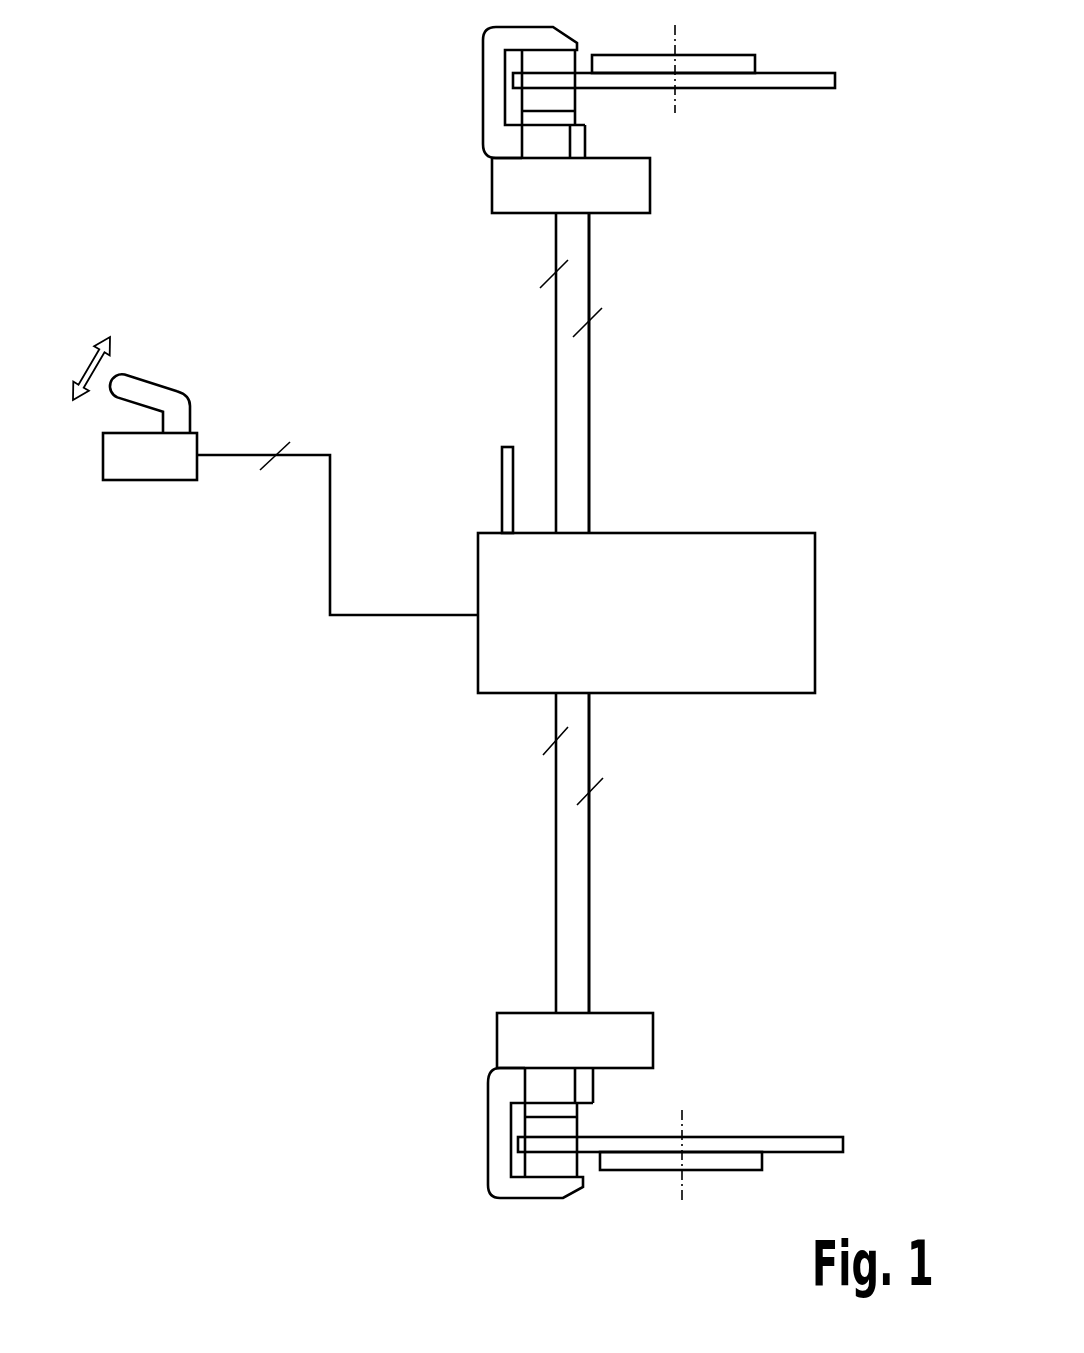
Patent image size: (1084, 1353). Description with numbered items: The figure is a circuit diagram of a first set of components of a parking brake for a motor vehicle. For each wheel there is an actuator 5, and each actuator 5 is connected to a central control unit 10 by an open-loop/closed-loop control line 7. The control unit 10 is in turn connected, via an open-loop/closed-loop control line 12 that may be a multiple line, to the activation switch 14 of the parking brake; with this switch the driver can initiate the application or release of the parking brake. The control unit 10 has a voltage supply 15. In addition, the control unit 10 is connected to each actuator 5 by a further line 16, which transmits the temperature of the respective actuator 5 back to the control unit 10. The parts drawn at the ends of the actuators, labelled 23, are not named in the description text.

The actuator 5 is at (630, 183).
The open-loop/closed-loop control line 7 is at (555, 420).
The control unit 10 is at (802, 612).
The open-loop/closed-loop control line 12 is at (233, 455).
The activation switch 14 is at (152, 468).
The voltage supply 15 is at (498, 467).
The line 16 is at (590, 465).
The clamp 23 is at (498, 100).